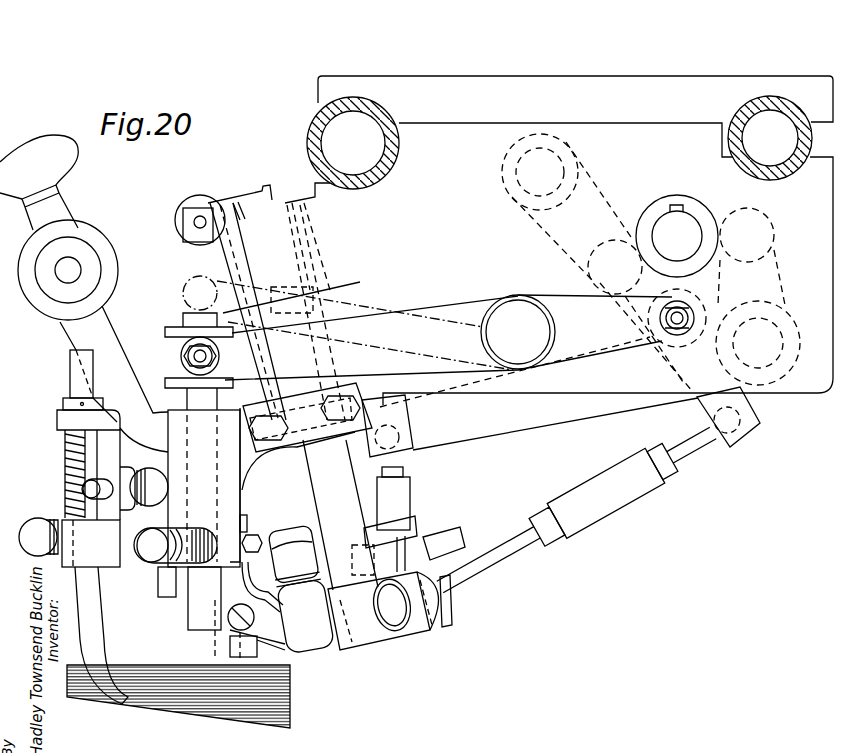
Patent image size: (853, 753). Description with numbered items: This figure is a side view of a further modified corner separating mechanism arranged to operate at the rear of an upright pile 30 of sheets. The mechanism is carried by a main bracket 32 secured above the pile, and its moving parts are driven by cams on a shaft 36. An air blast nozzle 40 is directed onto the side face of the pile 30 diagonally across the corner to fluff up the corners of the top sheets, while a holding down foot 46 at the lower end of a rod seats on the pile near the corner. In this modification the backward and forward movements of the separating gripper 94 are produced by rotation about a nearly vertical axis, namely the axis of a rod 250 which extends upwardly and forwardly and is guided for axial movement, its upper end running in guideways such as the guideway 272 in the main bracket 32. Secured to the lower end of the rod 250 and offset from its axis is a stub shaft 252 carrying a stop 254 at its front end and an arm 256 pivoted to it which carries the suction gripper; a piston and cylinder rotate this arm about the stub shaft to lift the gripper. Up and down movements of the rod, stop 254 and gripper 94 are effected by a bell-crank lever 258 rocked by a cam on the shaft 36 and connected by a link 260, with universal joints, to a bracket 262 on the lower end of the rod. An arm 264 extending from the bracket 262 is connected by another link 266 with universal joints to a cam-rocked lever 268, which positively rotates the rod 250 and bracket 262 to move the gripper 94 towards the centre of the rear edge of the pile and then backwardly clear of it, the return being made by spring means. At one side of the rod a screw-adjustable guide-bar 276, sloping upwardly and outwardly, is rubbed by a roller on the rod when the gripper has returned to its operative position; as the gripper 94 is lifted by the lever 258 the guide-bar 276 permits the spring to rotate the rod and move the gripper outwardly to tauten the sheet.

The pile 30 is at (291, 691).
The main bracket 32 is at (832, 388).
The shaft 36 is at (675, 226).
The air blast nozzle 40 is at (96, 642).
The holding down foot 46 is at (207, 645).
The separating gripper 94 is at (217, 665).
The rod 250 is at (340, 490).
The stub shaft 252 is at (280, 653).
The stop 254 is at (251, 663).
The arm 256 is at (290, 553).
The bell-crank lever 258 is at (535, 420).
The link 260 is at (406, 494).
The bracket 262 is at (455, 535).
The arm 264 is at (422, 622).
The link 266 is at (593, 495).
The cam-rocked lever 268 is at (703, 412).
The guideway 272 is at (289, 200).
The guide-bar 276 is at (232, 253).